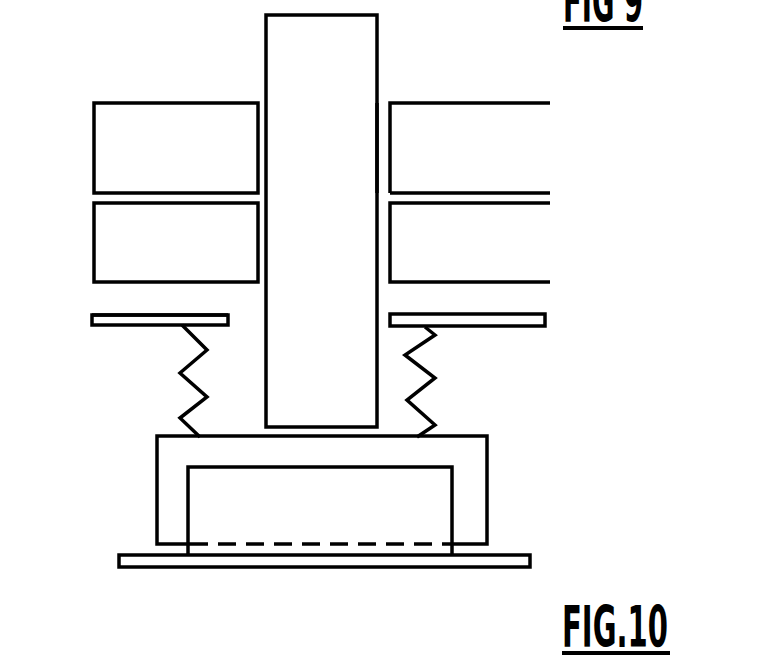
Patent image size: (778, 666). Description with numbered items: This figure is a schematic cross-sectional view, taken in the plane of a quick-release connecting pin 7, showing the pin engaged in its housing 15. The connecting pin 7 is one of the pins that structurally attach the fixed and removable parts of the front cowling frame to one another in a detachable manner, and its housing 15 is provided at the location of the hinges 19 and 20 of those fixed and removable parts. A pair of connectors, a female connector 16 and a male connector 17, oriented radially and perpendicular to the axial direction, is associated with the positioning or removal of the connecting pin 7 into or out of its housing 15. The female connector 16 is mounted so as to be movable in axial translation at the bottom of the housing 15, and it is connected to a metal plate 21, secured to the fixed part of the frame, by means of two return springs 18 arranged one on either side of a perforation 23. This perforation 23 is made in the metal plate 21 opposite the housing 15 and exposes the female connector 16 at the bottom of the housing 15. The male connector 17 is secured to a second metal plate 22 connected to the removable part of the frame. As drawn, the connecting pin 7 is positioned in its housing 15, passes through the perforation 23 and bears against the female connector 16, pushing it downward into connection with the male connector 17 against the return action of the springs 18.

The connecting pin 7 is at (330, 62).
The housing 15 is at (383, 130).
The female connector 16 is at (487, 478).
The male connector 17 is at (368, 522).
The return springs 18 is at (183, 377).
The hinge 19 is at (113, 135).
The hinge 20 is at (120, 233).
The metal plate 21 is at (540, 319).
The metal plate 22 is at (528, 565).
The perforation 23 is at (237, 324).